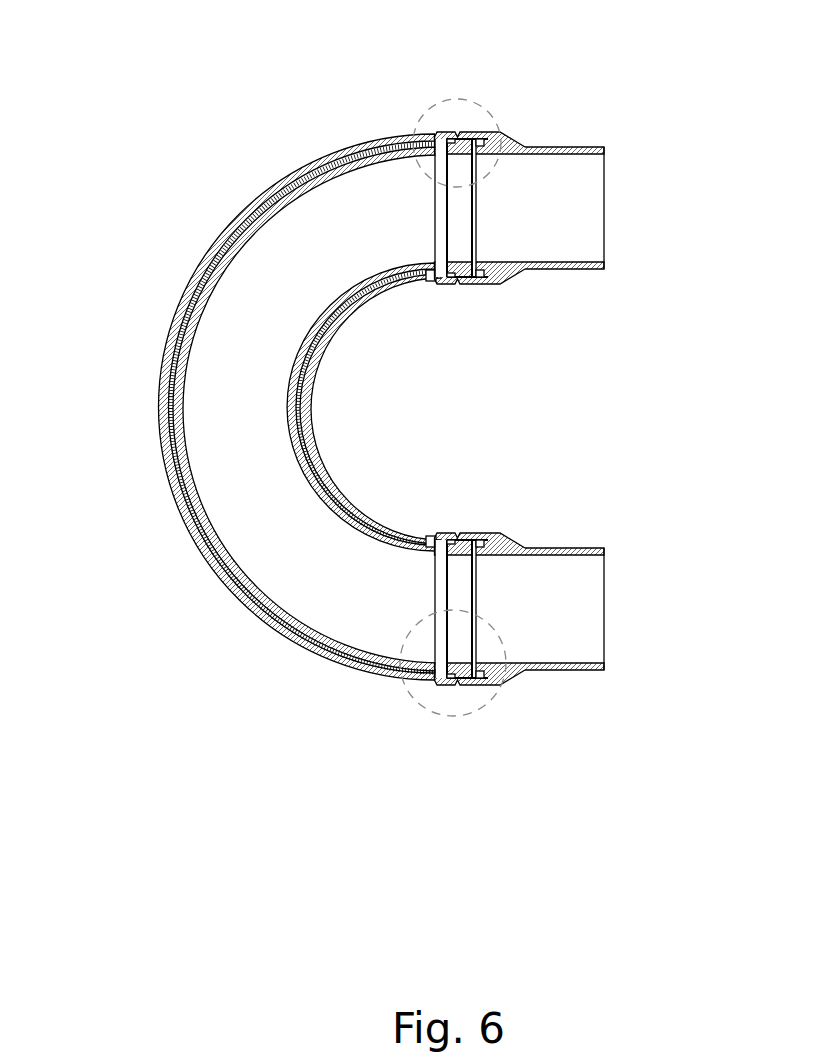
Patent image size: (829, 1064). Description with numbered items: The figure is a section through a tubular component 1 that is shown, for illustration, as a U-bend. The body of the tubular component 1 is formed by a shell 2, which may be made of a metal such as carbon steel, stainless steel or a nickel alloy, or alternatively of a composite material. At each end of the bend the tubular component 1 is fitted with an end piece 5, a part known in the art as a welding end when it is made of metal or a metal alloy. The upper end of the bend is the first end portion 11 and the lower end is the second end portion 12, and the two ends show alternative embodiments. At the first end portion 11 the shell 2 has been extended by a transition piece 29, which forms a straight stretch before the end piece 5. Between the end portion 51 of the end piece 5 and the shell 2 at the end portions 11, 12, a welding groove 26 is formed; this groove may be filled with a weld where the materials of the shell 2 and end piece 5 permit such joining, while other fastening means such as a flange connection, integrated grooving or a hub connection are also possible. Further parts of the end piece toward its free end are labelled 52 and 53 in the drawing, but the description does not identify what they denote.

The tubular component 1 is at (192, 98).
The shell 2 is at (183, 287).
The end piece 5 is at (503, 277).
The first end portion 11 is at (412, 275).
The second end portion 12 is at (395, 528).
The welding groove 26 is at (430, 277).
The transition piece 29 is at (448, 280).
The end portion of the end piece 51 is at (473, 283).
The straight pipe section 52 is at (578, 270).
The pipe end 53 is at (620, 262).